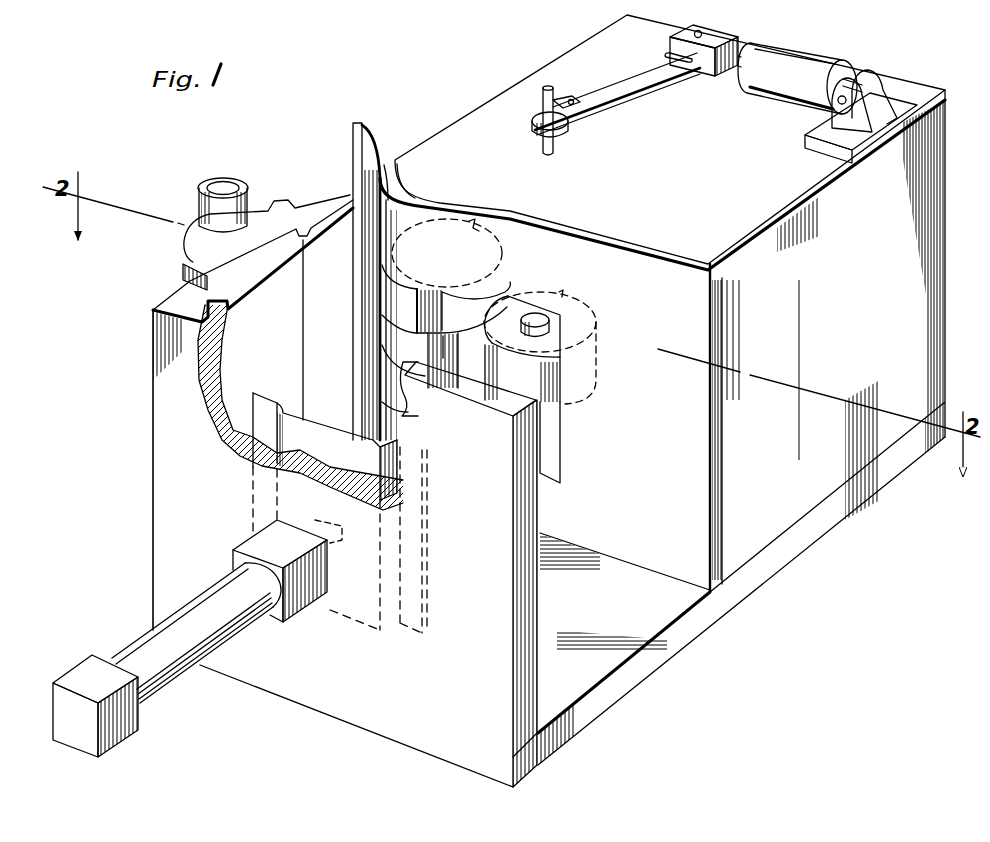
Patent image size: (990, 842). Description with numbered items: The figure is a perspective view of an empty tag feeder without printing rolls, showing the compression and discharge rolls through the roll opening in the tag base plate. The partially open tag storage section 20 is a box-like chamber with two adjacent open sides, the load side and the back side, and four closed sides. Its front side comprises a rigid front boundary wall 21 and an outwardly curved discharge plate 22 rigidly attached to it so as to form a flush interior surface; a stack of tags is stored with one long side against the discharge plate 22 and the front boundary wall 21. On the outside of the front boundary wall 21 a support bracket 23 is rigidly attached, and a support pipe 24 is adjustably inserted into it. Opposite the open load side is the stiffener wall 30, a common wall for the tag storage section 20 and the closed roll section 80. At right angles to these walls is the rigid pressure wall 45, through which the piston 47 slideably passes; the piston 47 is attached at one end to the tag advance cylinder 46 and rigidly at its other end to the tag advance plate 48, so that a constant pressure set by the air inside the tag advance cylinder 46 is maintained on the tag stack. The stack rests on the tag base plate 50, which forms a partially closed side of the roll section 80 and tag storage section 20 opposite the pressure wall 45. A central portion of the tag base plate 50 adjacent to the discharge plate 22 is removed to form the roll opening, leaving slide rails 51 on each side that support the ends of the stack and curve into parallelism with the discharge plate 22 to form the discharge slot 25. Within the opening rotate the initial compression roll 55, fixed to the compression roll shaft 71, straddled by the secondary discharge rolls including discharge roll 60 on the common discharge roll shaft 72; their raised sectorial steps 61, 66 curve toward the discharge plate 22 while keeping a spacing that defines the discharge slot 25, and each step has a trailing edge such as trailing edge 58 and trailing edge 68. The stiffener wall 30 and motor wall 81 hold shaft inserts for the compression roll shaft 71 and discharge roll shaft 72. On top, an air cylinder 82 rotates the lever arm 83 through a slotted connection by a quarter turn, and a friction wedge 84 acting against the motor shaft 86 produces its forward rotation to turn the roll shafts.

The tag storage section 20 is at (328, 188).
The front boundary wall 21 is at (240, 302).
The discharge plate 22 is at (360, 155).
The support bracket 23 is at (279, 205).
The support pipe 24 is at (202, 187).
The discharge slot 25 is at (387, 153).
The stiffener wall 30 is at (603, 609).
The pressure wall 45 is at (466, 505).
The tag advance cylinder 46 is at (153, 644).
The piston 47 is at (333, 522).
The tag advance plate 48 is at (267, 430).
The tag base plate 50 is at (683, 312).
The slide rails 51 is at (400, 173).
The compression roll 55 is at (547, 345).
The trailing edge 58 is at (505, 312).
The discharge roll 60 is at (400, 365).
The raised sectorial step 61 is at (400, 402).
The raised sectorial step 66 is at (407, 312).
The trailing edge 68 is at (420, 281).
The compression roll shaft 71 is at (560, 316).
The discharge roll shaft 72 is at (443, 358).
The roll section 80 is at (453, 117).
The motor wall 81 is at (684, 184).
The air cylinder 82 is at (787, 67).
The lever arm 83 is at (637, 70).
The friction wedge 84 is at (563, 98).
The motor shaft 86 is at (543, 97).